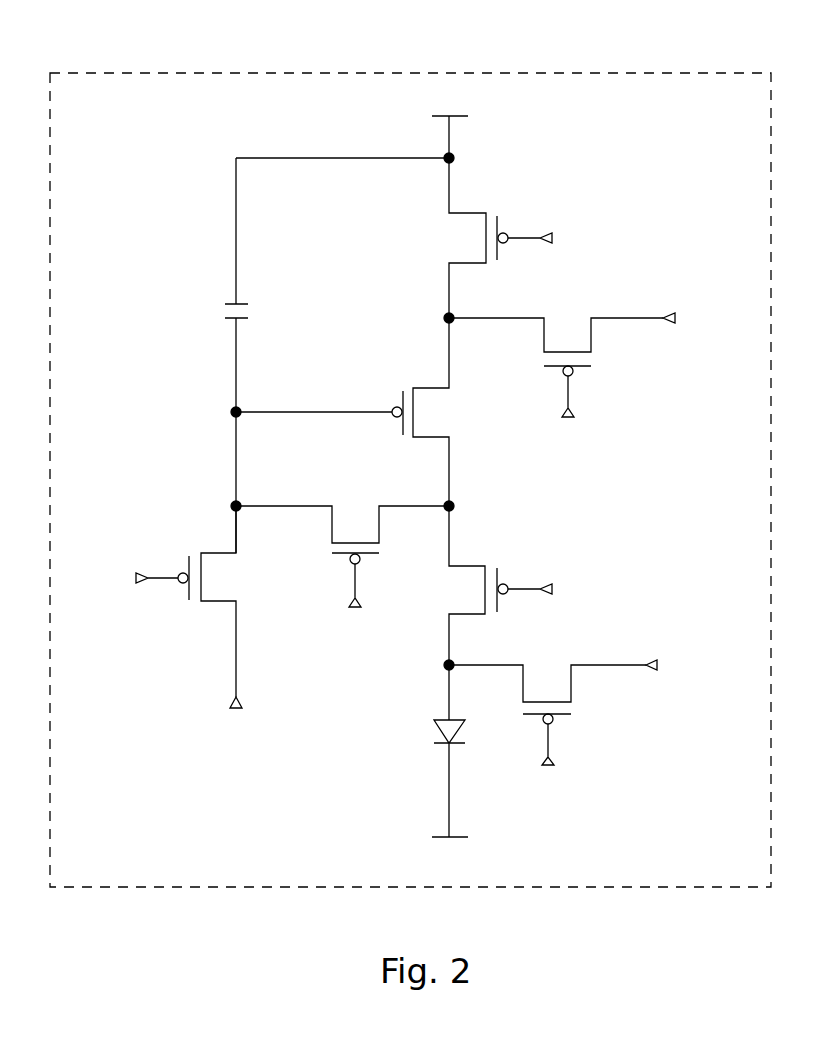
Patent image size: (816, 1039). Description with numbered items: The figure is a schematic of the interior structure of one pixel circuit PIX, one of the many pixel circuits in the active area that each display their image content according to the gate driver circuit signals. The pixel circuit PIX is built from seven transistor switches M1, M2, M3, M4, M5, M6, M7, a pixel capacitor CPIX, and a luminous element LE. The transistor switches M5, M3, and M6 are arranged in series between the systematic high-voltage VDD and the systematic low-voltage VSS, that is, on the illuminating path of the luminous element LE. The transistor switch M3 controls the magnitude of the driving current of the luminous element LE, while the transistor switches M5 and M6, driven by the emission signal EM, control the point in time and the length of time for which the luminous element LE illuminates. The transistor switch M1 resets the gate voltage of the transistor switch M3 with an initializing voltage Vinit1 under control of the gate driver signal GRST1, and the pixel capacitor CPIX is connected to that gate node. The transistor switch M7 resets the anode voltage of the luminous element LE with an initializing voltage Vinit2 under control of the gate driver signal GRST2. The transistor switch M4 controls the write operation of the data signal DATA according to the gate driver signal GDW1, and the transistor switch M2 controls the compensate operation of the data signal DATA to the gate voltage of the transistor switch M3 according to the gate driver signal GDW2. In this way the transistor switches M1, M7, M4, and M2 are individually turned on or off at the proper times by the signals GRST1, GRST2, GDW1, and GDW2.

The pixel circuit PIX is at (623, 73).
The systematic high-voltage VDD is at (448, 123).
The systematic low-voltage VSS is at (448, 853).
The transistor switch M1 is at (209, 601).
The transistor switch M2 is at (342, 533).
The transistor switch M3 is at (344, 412).
The transistor switch M4 is at (556, 345).
The transistor switch M5 is at (472, 238).
The transistor switch M6 is at (473, 585).
The transistor switch M7 is at (547, 692).
The pixel capacitor CPIX is at (259, 314).
The emission control signal EM is at (551, 414).
The data signal DATA is at (703, 317).
The gate driver signal GDW1 is at (571, 412).
The gate driver signal GDW2 is at (359, 602).
The gate driver signal GRST1 is at (126, 581).
The gate driver signal GRST2 is at (550, 759).
The initializing voltage Vinit1 is at (236, 717).
The initializing voltage Vinit2 is at (689, 665).
The luminous element LE is at (449, 743).